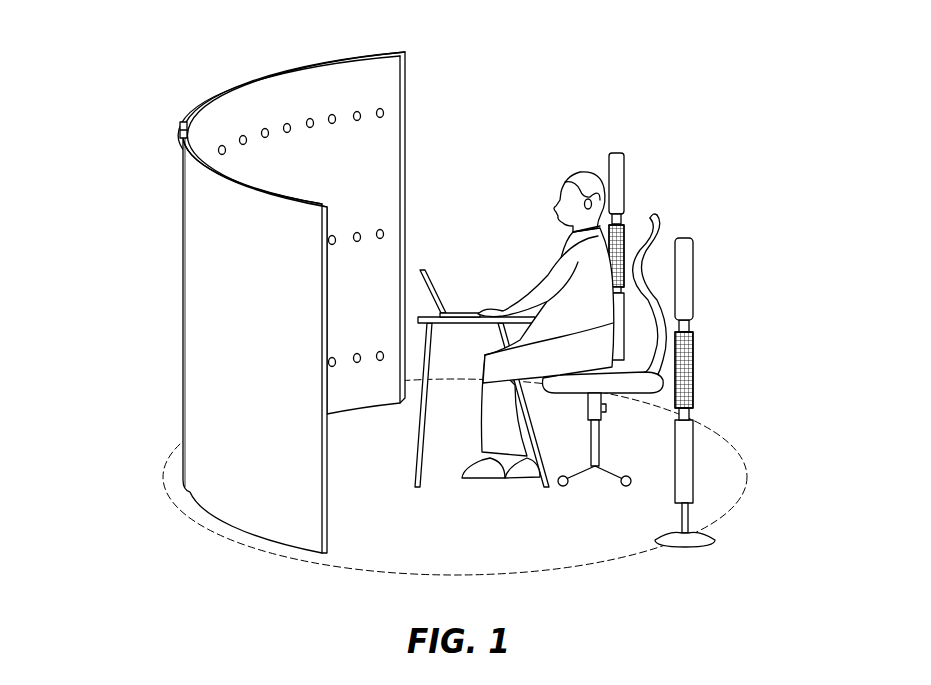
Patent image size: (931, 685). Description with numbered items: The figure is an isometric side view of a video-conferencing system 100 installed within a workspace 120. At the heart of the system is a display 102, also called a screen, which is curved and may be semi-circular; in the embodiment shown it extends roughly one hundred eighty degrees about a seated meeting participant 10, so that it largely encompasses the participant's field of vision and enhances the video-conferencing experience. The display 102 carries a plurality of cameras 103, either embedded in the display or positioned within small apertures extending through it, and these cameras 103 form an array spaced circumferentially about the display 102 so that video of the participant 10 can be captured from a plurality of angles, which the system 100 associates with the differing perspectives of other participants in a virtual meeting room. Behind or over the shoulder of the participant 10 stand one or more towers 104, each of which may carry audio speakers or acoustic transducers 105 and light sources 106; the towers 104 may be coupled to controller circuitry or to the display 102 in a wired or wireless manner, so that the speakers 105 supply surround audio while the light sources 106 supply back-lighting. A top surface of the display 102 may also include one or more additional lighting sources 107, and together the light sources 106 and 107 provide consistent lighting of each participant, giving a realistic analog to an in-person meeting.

The video-conferencing system 100 is at (217, 53).
The meeting participant 10 is at (572, 165).
The display 102 is at (181, 291).
The cameras 103 is at (364, 122).
The towers 104 is at (650, 518).
The audio speakers 105 is at (700, 364).
The light sources 106 is at (700, 275).
The additional lighting sources 107 is at (180, 127).
The workspace 120 is at (334, 101).